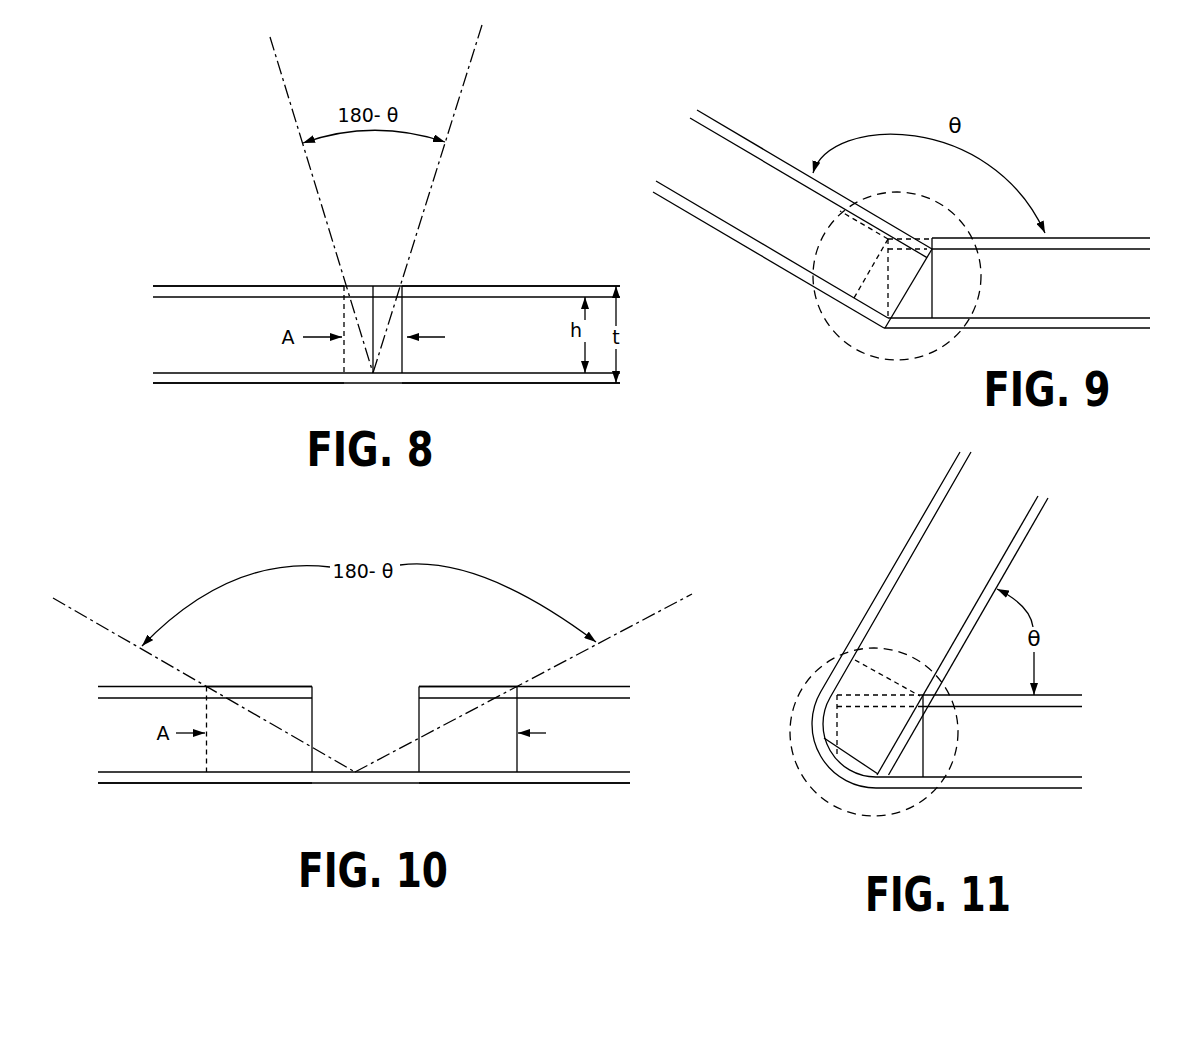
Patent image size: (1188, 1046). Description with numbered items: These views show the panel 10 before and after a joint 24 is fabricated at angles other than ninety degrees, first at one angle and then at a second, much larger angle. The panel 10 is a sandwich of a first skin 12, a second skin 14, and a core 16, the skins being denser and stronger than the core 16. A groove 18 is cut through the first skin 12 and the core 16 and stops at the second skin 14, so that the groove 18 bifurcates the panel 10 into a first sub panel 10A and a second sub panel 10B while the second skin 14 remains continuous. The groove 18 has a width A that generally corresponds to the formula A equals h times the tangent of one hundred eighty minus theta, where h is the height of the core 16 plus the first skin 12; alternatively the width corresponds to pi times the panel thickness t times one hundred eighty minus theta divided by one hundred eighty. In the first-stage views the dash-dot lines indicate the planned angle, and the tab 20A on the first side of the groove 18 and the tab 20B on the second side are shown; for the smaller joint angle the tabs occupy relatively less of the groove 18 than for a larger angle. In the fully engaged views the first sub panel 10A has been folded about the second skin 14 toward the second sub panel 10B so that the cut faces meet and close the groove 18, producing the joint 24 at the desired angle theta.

In FIG. 8, the panel 10 is at (191, 163).
In FIG. 10, the panel 10 is at (143, 547).
In FIG. 11, the panel 10 is at (1066, 587).
In FIG. 8, the first sub panel 10A is at (172, 283).
In FIG. 9, the first sub panel 10A is at (762, 143).
In FIG. 10, the first sub panel 10A is at (198, 790).
In FIG. 11, the first sub panel 10A is at (909, 531).
In FIG. 8, the second sub panel 10B is at (570, 283).
In FIG. 9, the second sub panel 10B is at (1092, 237).
In FIG. 10, the second sub panel 10B is at (498, 790).
In FIG. 11, the second sub panel 10B is at (987, 791).
In FIG. 8, the first skin 12 is at (238, 287).
In FIG. 10, the first skin 12 is at (122, 690).
In FIG. 8, the second skin 14 is at (220, 378).
In FIG. 10, the second skin 14 is at (122, 784).
In FIG. 8, the core 16 is at (205, 351).
In FIG. 9, the core 16 is at (738, 201).
In FIG. 10, the core 16 is at (107, 746).
In FIG. 11, the core 16 is at (934, 579).
In FIG. 8, the groove 18 is at (372, 266).
In FIG. 10, the groove 18 is at (368, 666).
In FIG. 10, the tab 20A is at (271, 680).
In FIG. 10, the tab 20B is at (467, 680).
In FIG. 9, the joint 24 is at (828, 330).
In FIG. 11, the joint 24 is at (820, 794).